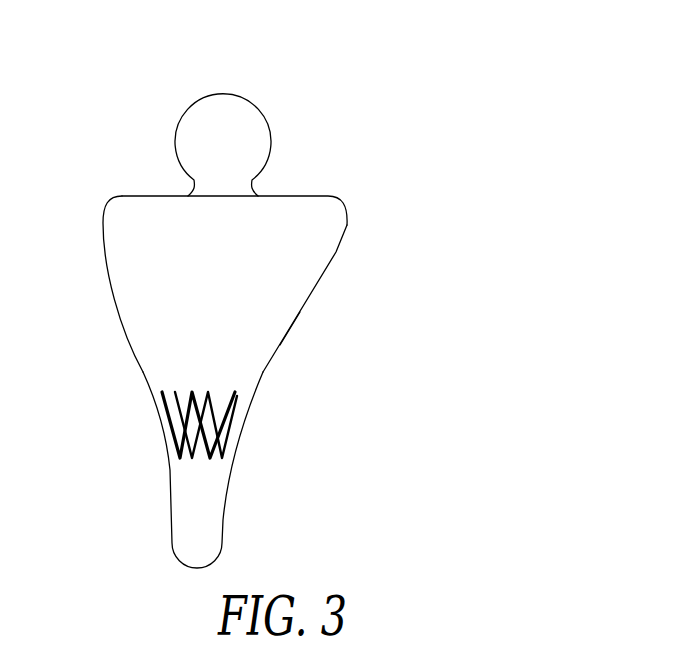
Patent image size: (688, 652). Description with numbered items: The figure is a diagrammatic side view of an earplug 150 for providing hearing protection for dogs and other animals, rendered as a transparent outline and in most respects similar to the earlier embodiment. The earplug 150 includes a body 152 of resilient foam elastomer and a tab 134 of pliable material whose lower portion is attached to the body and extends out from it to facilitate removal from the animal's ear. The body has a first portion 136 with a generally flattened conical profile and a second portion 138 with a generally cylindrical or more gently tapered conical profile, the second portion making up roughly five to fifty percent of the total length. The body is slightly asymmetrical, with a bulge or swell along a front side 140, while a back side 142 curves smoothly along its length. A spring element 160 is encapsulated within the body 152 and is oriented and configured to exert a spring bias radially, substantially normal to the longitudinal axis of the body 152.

The earplug 150 is at (314, 44).
The tab 134 is at (175, 132).
The body 152 is at (343, 205).
The first portion 136 is at (337, 253).
The back side 142 is at (292, 364).
The front side 140 is at (97, 313).
The second portion 138 is at (223, 527).
The spring element 160 is at (238, 410).